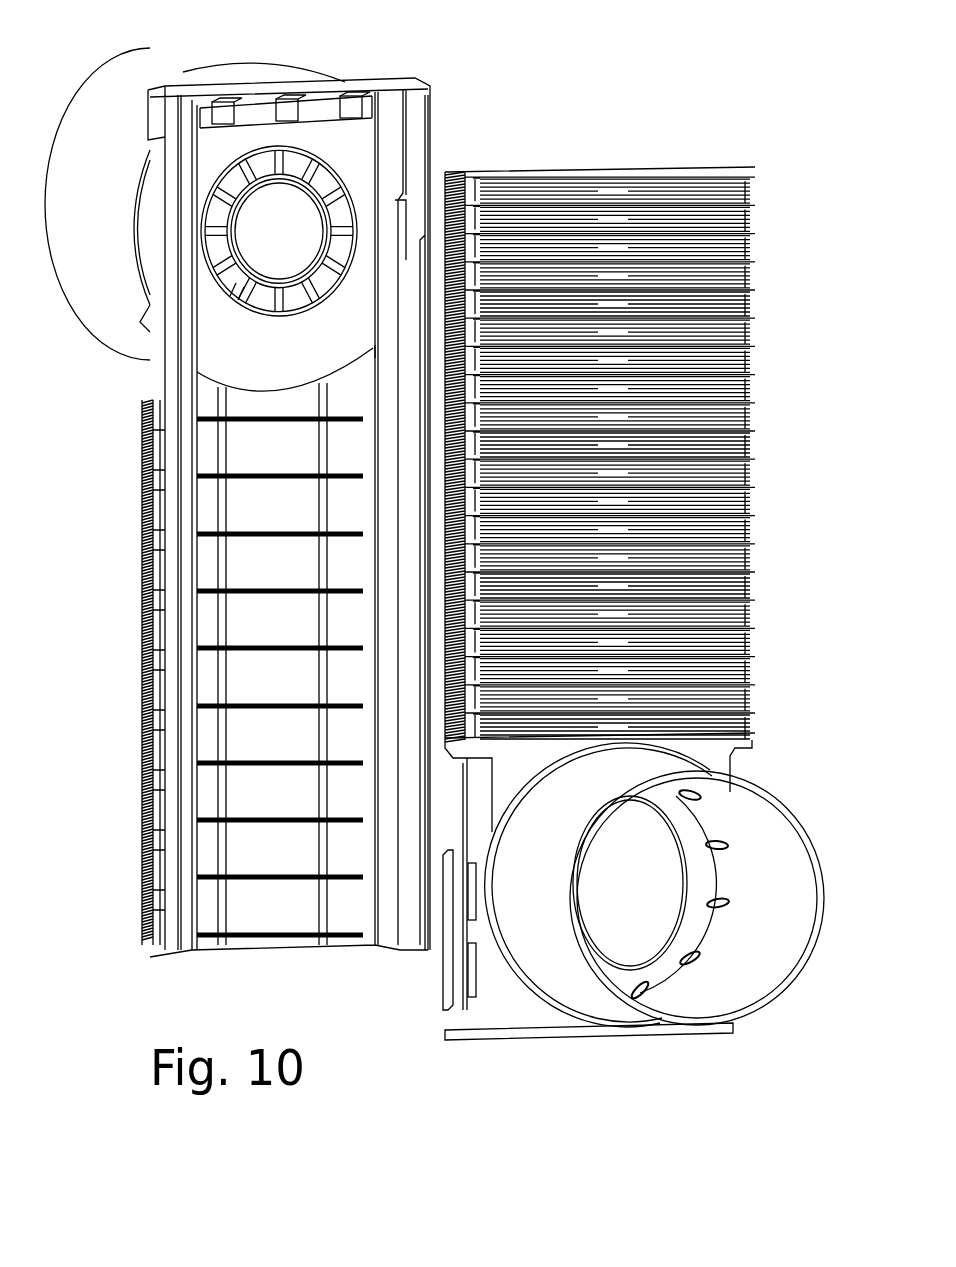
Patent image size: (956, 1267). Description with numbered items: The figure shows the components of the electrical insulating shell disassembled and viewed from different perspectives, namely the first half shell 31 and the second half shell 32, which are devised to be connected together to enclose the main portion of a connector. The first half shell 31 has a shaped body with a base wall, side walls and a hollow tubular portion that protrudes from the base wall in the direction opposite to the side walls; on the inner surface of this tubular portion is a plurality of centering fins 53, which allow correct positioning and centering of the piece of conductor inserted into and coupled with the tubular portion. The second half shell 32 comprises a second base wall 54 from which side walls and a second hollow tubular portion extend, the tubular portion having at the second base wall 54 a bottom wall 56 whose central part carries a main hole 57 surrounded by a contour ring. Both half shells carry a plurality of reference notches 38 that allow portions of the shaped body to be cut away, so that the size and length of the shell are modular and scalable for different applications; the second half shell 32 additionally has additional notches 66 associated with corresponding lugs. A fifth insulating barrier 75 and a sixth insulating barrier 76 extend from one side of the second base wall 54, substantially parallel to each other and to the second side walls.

The first half shell 31 is at (792, 455).
The second half shell 32 is at (123, 788).
The reference notches 38 is at (255, 652).
The centering fins 53 is at (727, 900).
The second base wall 54 is at (270, 897).
The bottom wall 56 is at (352, 158).
The main hole 57 is at (295, 246).
The additional notches 66 is at (233, 288).
The fifth insulating barrier 75 is at (190, 115).
The sixth insulating barrier 76 is at (397, 180).